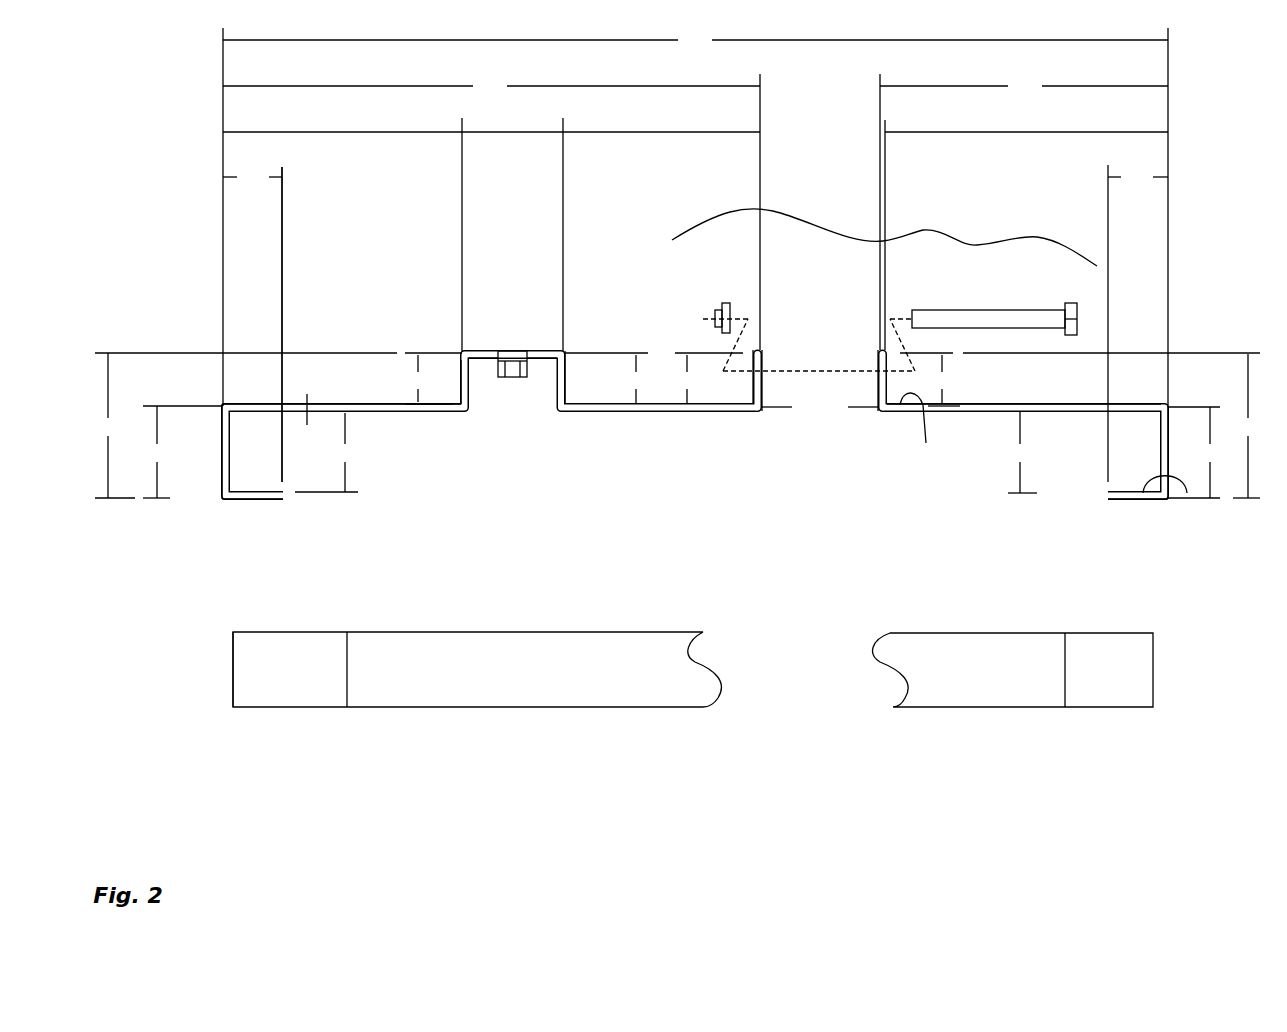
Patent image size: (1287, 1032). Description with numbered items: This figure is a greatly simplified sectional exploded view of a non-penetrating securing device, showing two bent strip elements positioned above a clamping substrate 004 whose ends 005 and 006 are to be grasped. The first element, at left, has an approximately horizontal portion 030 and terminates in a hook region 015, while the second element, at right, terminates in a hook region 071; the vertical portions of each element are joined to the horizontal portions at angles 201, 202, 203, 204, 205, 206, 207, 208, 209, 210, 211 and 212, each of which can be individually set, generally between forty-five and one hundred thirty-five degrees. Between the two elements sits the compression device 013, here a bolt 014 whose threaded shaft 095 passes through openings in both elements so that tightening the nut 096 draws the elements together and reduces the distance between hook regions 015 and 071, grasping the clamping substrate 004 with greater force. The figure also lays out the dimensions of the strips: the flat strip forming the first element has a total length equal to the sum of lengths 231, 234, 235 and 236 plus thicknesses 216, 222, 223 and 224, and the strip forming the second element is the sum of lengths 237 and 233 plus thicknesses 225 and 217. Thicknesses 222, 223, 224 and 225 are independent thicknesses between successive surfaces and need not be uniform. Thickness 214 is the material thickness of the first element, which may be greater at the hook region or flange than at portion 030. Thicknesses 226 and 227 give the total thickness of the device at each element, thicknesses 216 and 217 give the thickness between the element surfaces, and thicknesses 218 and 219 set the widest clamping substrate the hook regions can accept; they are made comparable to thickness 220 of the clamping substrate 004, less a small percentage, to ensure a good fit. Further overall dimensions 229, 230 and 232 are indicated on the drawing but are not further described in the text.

The overall width dimension 229 is at (695, 217).
The left channel width dimension 230 is at (491, 212).
The right channel width dimension 232 is at (1024, 212).
The length 231 is at (252, 324).
The length 233 is at (1138, 323).
The length 234 is at (342, 132).
The length 235 is at (495, 132).
The length 236 is at (645, 132).
The length 237 is at (952, 132).
The compression device 013 is at (923, 230).
The nut 096 is at (720, 303).
The threaded shaft 095 is at (960, 310).
The bolt 014 is at (1035, 298).
The portion 030 is at (298, 322).
The hook region 015 is at (218, 533).
The angle 201 is at (222, 477).
The angle 202 is at (230, 450).
The angle 212 is at (243, 472).
The angle 203 is at (463, 395).
The angle 204 is at (468, 371).
The angle 205 is at (558, 371).
The angle 206 is at (583, 403).
The angle 207 is at (760, 390).
The angle 208 is at (782, 405).
The angle 209 is at (872, 405).
The hook region 071 is at (1170, 405).
The angle 210 is at (1153, 473).
The angle 211 is at (1180, 475).
The thickness 226 is at (114, 425).
The thickness 216 is at (157, 452).
The thickness 218 is at (327, 452).
The thickness 214 is at (307, 400).
The thickness 222 is at (418, 378).
The thickness 223 is at (636, 379).
The thickness 224 is at (687, 379).
The thickness 225 is at (942, 379).
The thickness 219 is at (1021, 452).
The thickness 217 is at (1197, 452).
The thickness 227 is at (1248, 426).
The clamping substrate 004 is at (197, 665).
The end 005 is at (233, 632).
The end 006 is at (1153, 633).
The thickness 220 is at (706, 669).